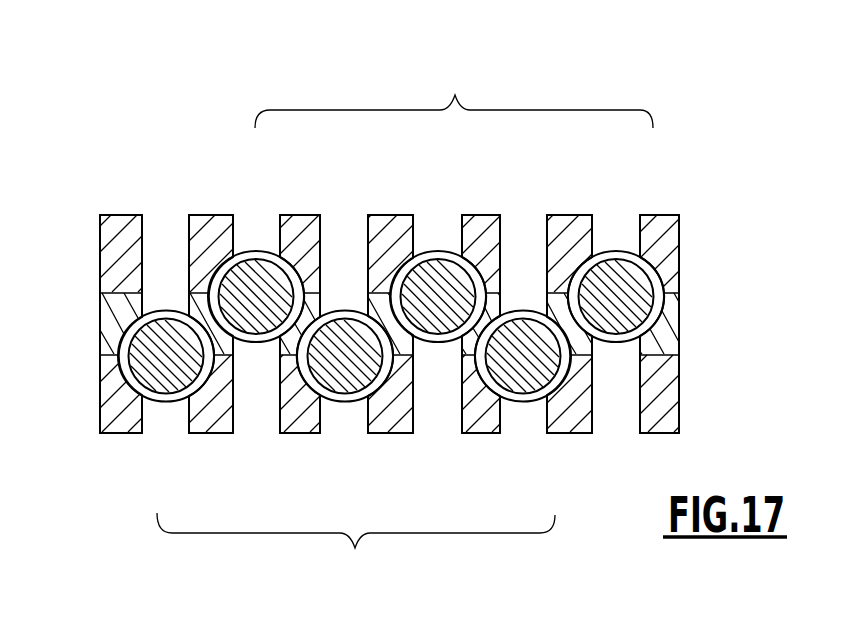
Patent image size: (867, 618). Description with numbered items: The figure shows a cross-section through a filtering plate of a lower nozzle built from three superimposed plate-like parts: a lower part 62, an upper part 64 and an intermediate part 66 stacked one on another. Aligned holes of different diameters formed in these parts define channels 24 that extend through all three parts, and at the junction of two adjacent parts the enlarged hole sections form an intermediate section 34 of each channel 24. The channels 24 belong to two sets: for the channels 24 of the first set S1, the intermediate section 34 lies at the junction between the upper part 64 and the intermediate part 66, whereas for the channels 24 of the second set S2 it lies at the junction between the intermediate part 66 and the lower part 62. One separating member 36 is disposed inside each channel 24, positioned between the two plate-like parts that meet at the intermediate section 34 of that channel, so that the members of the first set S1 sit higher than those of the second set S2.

The channel 24 is at (257, 224).
The intermediate section 34 is at (290, 268).
The separating member 36 is at (237, 272).
The lower part 62 is at (104, 395).
The upper part 64 is at (107, 254).
The intermediate part 66 is at (104, 317).
The first set S1 is at (454, 95).
The second set S2 is at (356, 548).